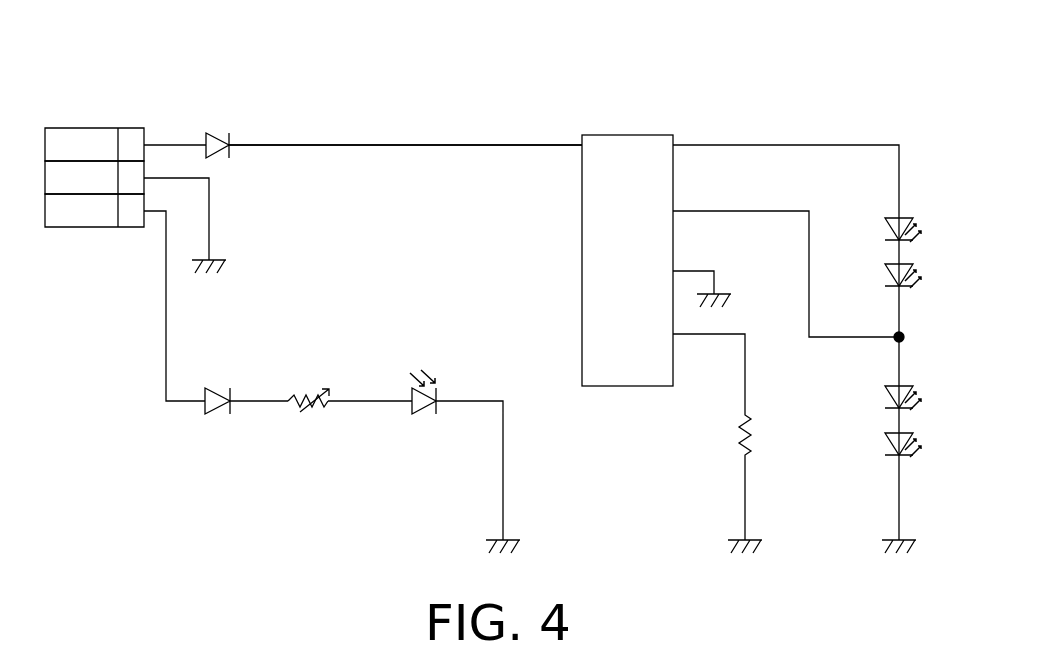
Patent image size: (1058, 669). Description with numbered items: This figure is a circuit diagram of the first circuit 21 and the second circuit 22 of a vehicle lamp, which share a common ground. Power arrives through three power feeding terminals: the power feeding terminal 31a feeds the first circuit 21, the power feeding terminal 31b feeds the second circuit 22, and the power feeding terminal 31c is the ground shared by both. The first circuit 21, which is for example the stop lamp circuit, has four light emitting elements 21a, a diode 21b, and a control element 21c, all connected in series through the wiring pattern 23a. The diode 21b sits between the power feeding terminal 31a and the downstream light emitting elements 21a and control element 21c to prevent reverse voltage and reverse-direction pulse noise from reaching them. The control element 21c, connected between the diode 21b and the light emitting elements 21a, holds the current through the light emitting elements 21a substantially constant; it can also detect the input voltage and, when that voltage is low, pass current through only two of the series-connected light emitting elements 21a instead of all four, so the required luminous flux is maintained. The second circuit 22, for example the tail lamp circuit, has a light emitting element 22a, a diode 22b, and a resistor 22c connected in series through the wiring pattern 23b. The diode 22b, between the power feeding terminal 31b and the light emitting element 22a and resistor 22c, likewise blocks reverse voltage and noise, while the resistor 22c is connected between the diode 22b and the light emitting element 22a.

The first circuit 21 is at (802, 86).
The light emitting element 21a is at (905, 220).
The diode 21b is at (217, 132).
The control element 21c is at (630, 150).
The second circuit 22 is at (370, 470).
The light emitting element 22a is at (424, 414).
The diode 22b is at (215, 414).
The resistor 22c is at (318, 410).
The wiring pattern 23a is at (376, 145).
The wiring pattern 23b is at (358, 401).
The power feeding terminal 31a is at (128, 140).
The power feeding terminal 31b is at (130, 213).
The power feeding terminal 31c is at (135, 172).